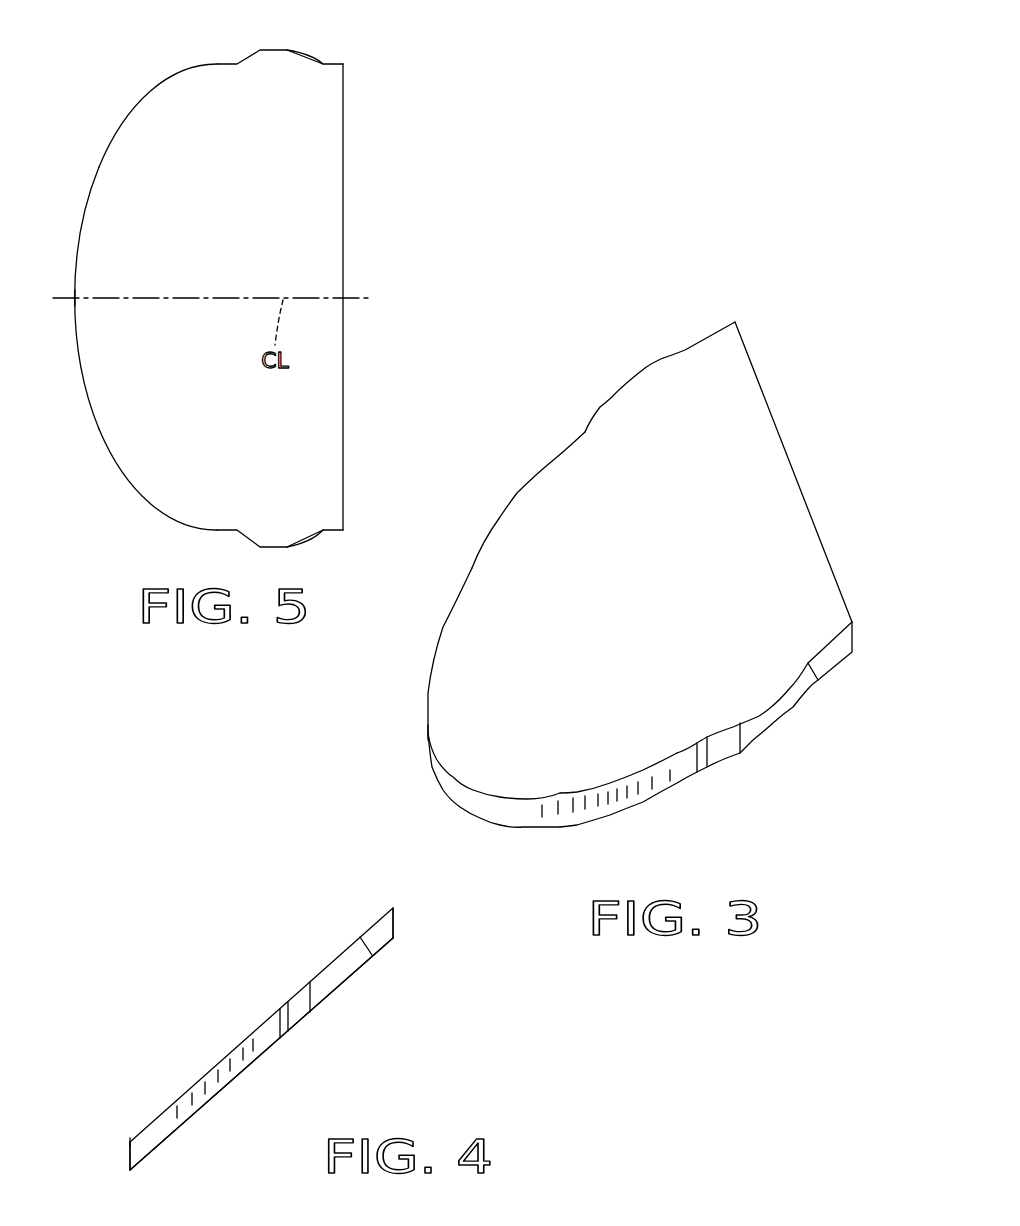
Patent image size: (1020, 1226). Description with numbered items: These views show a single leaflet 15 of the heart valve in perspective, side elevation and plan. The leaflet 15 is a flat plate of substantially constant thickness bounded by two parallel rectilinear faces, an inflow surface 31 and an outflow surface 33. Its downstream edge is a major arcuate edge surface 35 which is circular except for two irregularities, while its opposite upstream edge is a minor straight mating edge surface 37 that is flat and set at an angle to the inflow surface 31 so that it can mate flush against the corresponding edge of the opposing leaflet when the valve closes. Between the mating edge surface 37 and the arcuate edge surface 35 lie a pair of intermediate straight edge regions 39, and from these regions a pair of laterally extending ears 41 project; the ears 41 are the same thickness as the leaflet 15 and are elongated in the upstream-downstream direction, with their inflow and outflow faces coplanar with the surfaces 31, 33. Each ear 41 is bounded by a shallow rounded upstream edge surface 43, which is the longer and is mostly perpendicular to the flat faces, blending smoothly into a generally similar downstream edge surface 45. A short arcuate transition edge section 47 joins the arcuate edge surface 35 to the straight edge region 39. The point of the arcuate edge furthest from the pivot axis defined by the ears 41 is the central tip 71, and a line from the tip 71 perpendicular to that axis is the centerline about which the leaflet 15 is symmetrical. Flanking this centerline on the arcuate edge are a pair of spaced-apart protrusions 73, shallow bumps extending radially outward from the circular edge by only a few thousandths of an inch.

In FIG. 5, the leaflet 15 is at (165, 70).
In FIG. 3, the leaflet 15 is at (661, 326).
In FIG. 4, the leaflet 15 is at (228, 952).
In FIG. 5, the inflow surface 31 is at (183, 434).
In FIG. 3, the inflow surface 31 is at (597, 612).
In FIG. 4, the inflow surface 31 is at (175, 1098).
In FIG. 4, the outflow surface 33 is at (170, 1138).
In FIG. 5, the major arcuate edge surface 35 is at (98, 188).
In FIG. 3, the major arcuate edge surface 35 is at (525, 817).
In FIG. 4, the major arcuate edge surface 35 is at (130, 1155).
In FIG. 5, the minor straight mating edge surface 37 is at (345, 222).
In FIG. 3, the minor straight mating edge surface 37 is at (772, 407).
In FIG. 4, the minor straight mating edge surface 37 is at (395, 917).
In FIG. 3, the intermediate straight edge region 39 is at (698, 765).
In FIG. 4, the intermediate straight edge region 39 is at (283, 1033).
In FIG. 5, the ear 41 is at (271, 52).
In FIG. 3, the ear 41 is at (627, 392).
In FIG. 3, the upstream edge surface 43 is at (782, 712).
In FIG. 4, the upstream edge surface 43 is at (338, 973).
In FIG. 3, the downstream edge surface 45 is at (727, 750).
In FIG. 4, the downstream edge surface 45 is at (300, 998).
In FIG. 3, the arcuate transition edge section 47 is at (673, 780).
In FIG. 5, the central tip 71 is at (78, 303).
In FIG. 3, the central tip 71 is at (428, 757).
In FIG. 4, the central tip 71 is at (130, 1140).
In FIG. 5, the protrusion 73 is at (146, 109).
In FIG. 3, the protrusion 73 is at (505, 507).
In FIG. 4, the protrusion 73 is at (218, 1087).